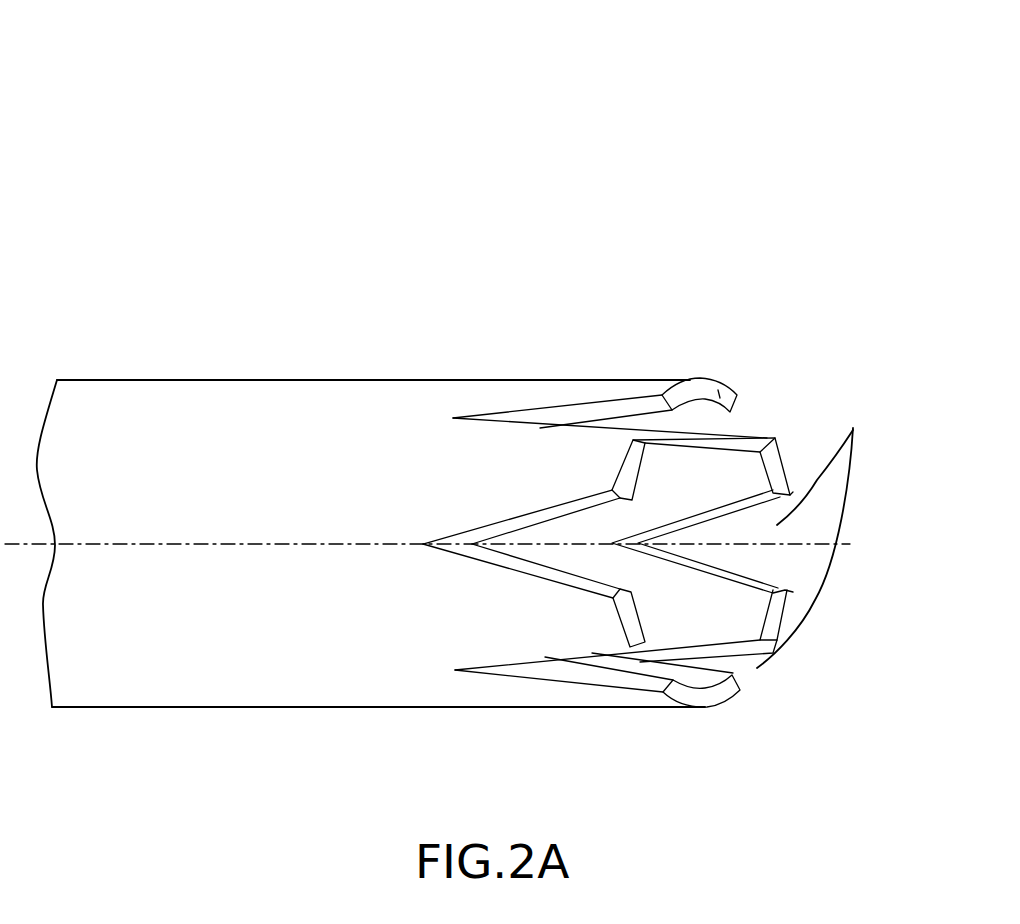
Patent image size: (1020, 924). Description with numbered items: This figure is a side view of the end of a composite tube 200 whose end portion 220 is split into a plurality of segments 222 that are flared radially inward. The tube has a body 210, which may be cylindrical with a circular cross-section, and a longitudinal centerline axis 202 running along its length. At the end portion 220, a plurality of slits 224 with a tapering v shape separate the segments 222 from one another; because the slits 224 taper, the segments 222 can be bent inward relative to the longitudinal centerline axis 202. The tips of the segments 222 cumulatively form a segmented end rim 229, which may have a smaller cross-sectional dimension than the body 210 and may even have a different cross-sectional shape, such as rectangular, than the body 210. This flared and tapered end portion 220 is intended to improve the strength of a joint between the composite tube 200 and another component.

The composite tube 200 is at (182, 187).
The longitudinal centerline axis 202 is at (838, 545).
The body 210 is at (256, 422).
The end portion 220 is at (742, 345).
The segments 222 is at (612, 395).
The slits 224 is at (747, 420).
The rim 229 is at (772, 462).